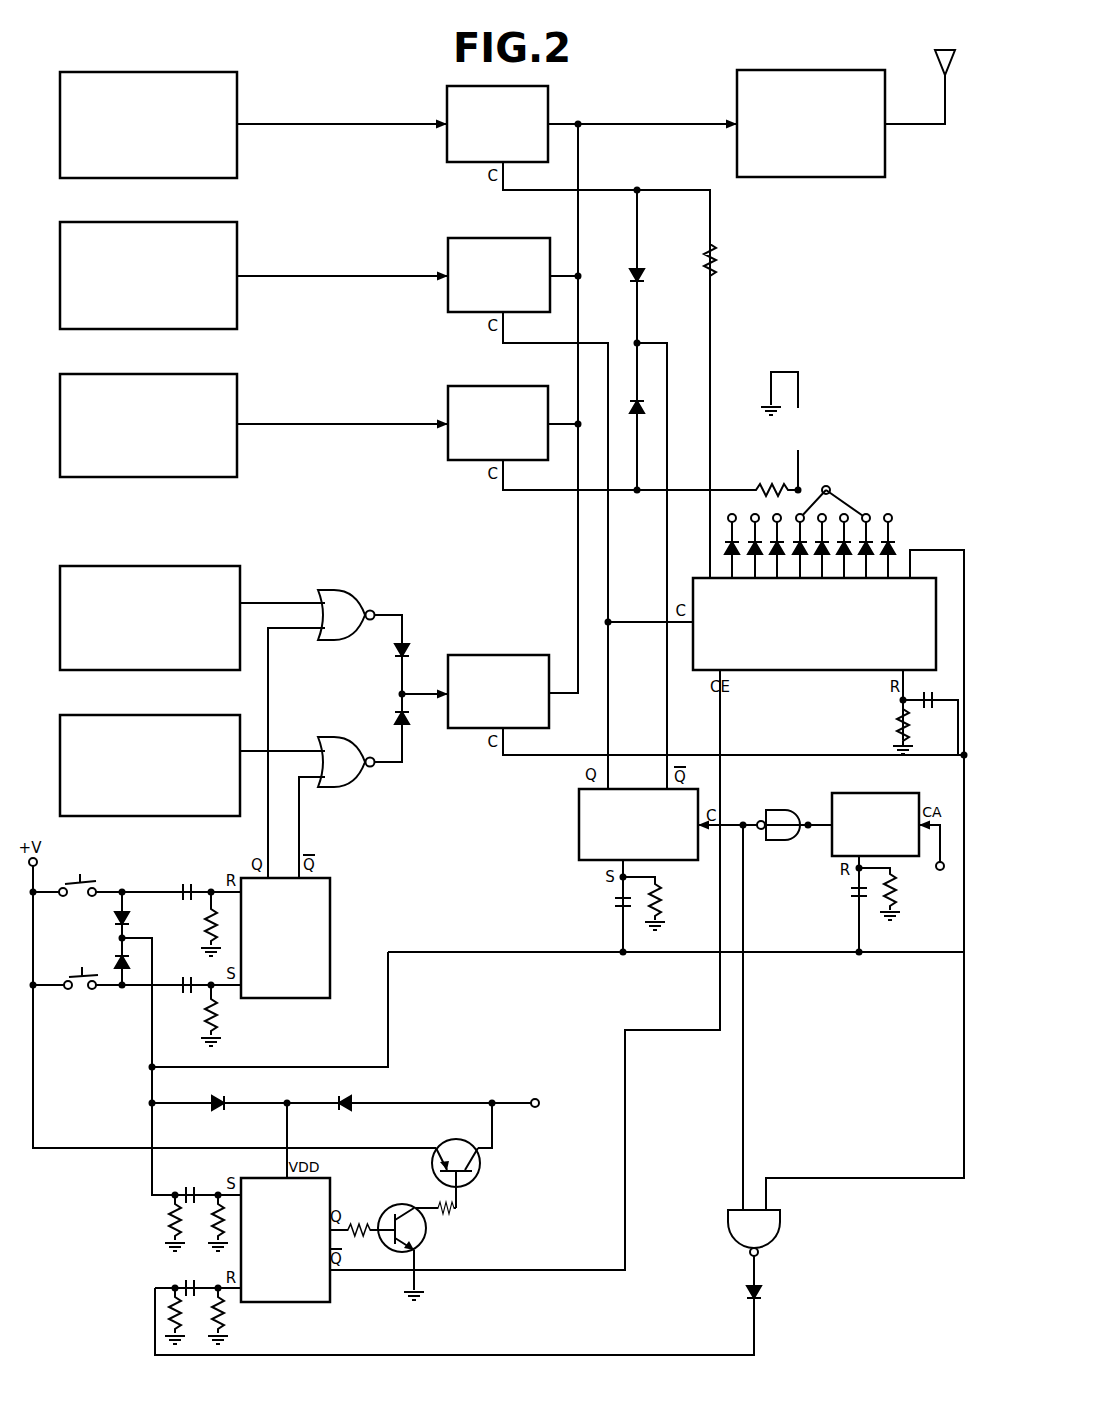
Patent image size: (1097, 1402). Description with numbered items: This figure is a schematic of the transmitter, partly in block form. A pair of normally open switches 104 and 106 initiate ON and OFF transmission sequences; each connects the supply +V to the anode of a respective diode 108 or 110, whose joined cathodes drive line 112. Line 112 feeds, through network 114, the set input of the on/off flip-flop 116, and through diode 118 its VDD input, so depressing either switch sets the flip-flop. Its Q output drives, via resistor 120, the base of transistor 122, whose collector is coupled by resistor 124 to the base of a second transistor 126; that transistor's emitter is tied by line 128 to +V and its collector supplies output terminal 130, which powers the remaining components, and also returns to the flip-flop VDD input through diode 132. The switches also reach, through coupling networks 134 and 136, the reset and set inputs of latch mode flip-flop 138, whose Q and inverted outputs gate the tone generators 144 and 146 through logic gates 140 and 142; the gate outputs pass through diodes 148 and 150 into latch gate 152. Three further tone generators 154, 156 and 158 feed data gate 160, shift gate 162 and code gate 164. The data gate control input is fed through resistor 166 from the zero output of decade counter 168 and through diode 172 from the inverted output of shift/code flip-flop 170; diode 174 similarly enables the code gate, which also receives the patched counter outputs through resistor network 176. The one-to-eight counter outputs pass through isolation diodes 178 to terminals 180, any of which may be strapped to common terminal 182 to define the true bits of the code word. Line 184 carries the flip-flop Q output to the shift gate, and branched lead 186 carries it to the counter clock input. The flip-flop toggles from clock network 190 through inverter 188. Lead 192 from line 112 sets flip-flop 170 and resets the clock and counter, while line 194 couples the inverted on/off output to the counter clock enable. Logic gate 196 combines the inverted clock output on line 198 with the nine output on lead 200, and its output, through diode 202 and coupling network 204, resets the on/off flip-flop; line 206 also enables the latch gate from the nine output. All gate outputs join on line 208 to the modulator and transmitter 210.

The normally open switch 104 is at (88, 880).
The normally open switch 106 is at (66, 975).
The diode 108 is at (129, 918).
The diode 110 is at (116, 968).
The line 112 is at (151, 1040).
The network 114 is at (190, 1186).
The on/off flip-flop 116 is at (300, 1303).
The diode 118 is at (218, 1096).
The resistor 120 is at (360, 1224).
The transistor 122 is at (385, 1253).
The resistor 124 is at (452, 1212).
The second transistor 126 is at (480, 1170).
The line 128 is at (380, 1148).
The output terminal 130 is at (536, 1098).
The diode 132 is at (348, 1096).
The coupling network 134 is at (196, 882).
The coupling network 136 is at (198, 994).
The latch mode flip-flop 138 is at (331, 935).
The logic gate 140 is at (358, 600).
The logic gate 142 is at (358, 780).
The tone generator 144 is at (195, 566).
The tone generator 146 is at (195, 715).
The diode 148 is at (410, 648).
The diode 150 is at (410, 722).
The latch gate 152 is at (540, 655).
The tone generator 154 is at (238, 98).
The tone generator 156 is at (238, 248).
The tone generator 158 is at (238, 400).
The data gate 160 is at (549, 104).
The shift gate 162 is at (473, 225).
The code gate 164 is at (473, 373).
The resistor 166 is at (717, 268).
The decade counter 168 is at (818, 672).
The shift/code flip-flop 170 is at (578, 833).
The diode 172 is at (645, 270).
The diode 174 is at (645, 405).
The resistor network 176 is at (786, 482).
The isolation diodes 178 is at (905, 527).
The terminals 180 is at (868, 512).
The common terminal 182 is at (830, 486).
The line 184 is at (610, 600).
The branched lead 186 is at (614, 630).
The inverter 188 is at (778, 810).
The clock network 190 is at (862, 793).
The lead 192 is at (389, 1022).
The line 194 is at (700, 1030).
The logic gate 196 is at (781, 1232).
The line 198 is at (745, 1058).
The lead 200 is at (845, 1178).
The diode 202 is at (762, 1292).
The coupling network 204 is at (174, 1284).
The line 206 is at (744, 754).
The line 208 is at (672, 122).
The modulator and transmitter 210 is at (886, 155).